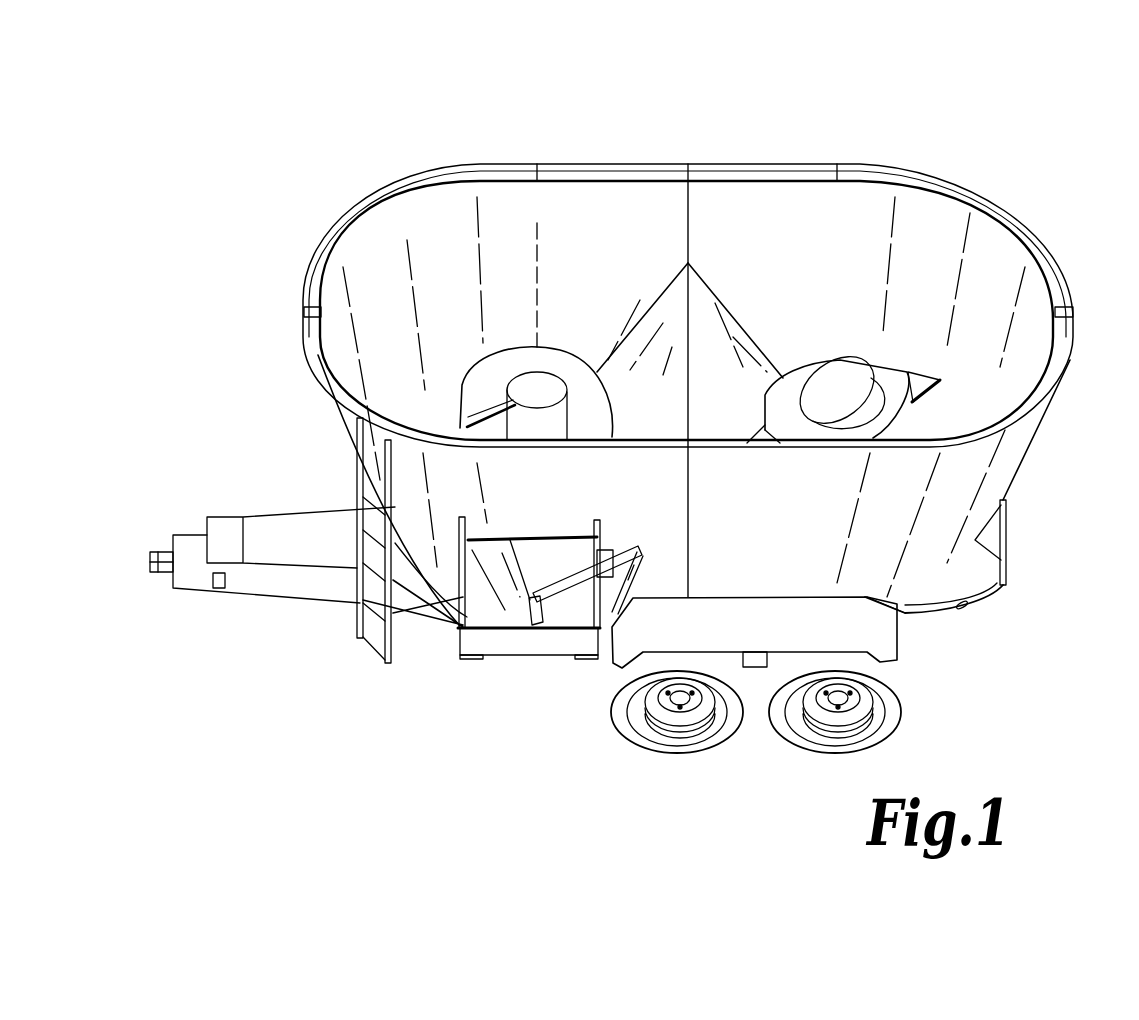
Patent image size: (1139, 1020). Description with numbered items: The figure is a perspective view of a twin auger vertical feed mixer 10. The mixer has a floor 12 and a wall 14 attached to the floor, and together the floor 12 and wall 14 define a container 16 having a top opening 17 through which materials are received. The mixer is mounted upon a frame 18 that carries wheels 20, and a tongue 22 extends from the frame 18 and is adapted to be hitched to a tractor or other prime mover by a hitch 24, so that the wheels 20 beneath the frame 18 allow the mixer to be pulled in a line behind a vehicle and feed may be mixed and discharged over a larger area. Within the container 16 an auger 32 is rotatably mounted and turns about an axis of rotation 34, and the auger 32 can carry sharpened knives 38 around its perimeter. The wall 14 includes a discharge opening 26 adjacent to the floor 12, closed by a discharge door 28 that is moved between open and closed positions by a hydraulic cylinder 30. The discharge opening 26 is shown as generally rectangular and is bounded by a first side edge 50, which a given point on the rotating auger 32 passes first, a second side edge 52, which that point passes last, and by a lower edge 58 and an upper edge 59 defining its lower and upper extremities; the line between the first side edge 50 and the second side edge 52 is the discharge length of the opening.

The vertical feed mixer 10 is at (932, 152).
The floor 12 is at (930, 612).
The wall 14 is at (995, 482).
The container 16 is at (755, 258).
The top opening 17 is at (607, 203).
The frame 18 is at (340, 597).
The wheels 20 is at (705, 737).
The tongue 22 is at (248, 590).
The hitch 24 is at (163, 572).
The discharge opening 26 is at (490, 612).
The discharge door 28 is at (548, 560).
The hydraulic cylinder 30 is at (613, 560).
The auger 32 is at (460, 383).
The axis of rotation 34 is at (530, 243).
The sharpened knives 38 is at (933, 370).
The first side edge 50 is at (595, 590).
The second side edge 52 is at (455, 575).
The lower edge 58 is at (533, 605).
The upper edge 59 is at (527, 540).